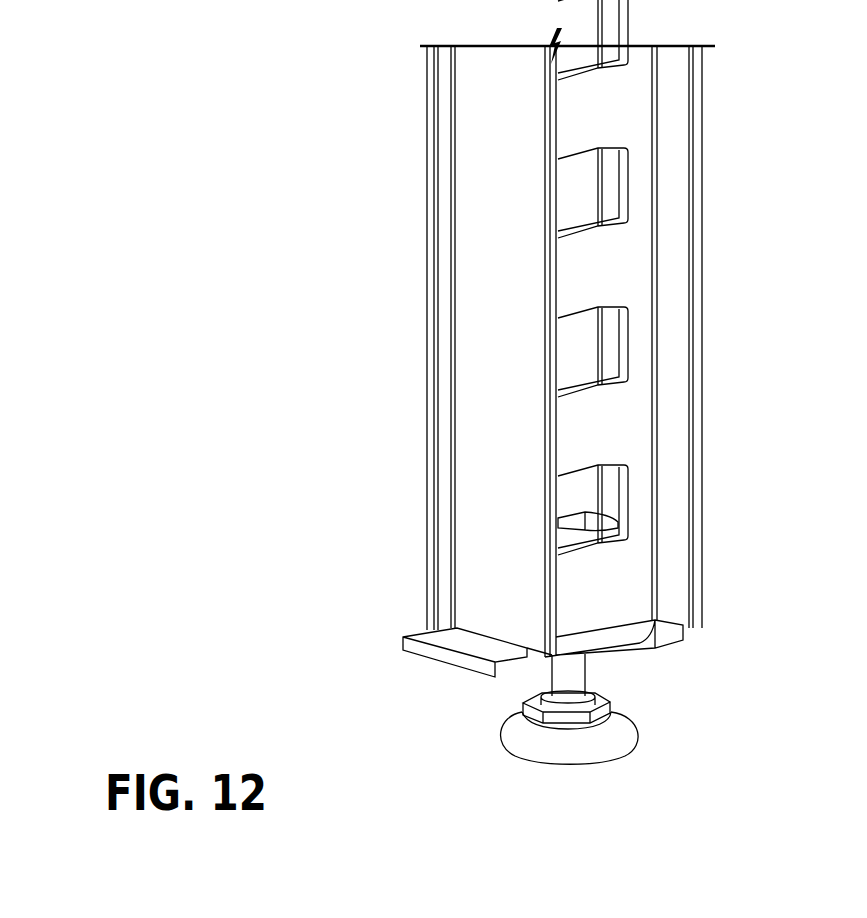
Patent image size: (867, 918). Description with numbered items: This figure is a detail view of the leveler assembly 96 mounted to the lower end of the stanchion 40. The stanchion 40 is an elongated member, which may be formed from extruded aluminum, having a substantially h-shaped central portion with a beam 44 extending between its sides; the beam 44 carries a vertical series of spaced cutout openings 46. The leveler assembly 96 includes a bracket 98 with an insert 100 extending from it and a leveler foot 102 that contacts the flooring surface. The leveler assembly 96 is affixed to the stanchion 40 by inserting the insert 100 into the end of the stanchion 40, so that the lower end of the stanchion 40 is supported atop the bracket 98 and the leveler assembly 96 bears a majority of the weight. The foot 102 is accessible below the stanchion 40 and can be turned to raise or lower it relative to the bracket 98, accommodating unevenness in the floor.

The stanchion 40 is at (714, 337).
The beam 44 is at (590, 127).
The cutout openings 46 is at (600, 312).
The leveler assembly 96 is at (410, 657).
The bracket 98 is at (453, 665).
The insert 100 is at (593, 532).
The leveler foot 102 is at (580, 762).